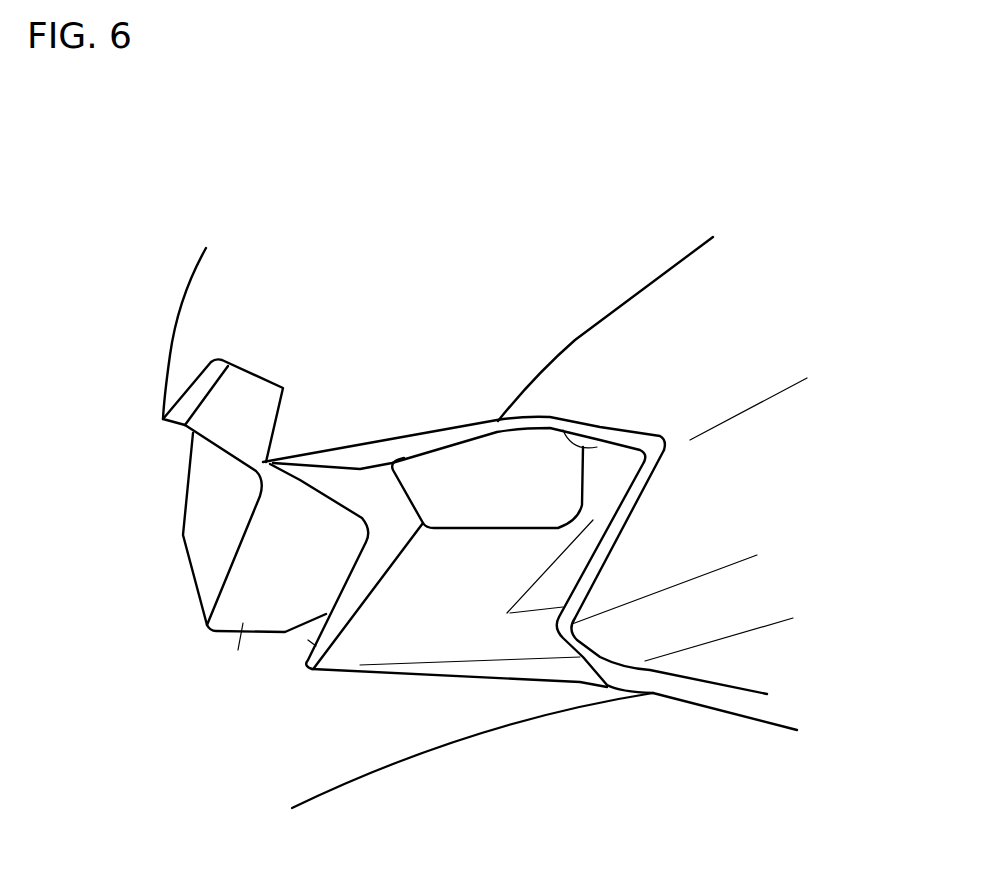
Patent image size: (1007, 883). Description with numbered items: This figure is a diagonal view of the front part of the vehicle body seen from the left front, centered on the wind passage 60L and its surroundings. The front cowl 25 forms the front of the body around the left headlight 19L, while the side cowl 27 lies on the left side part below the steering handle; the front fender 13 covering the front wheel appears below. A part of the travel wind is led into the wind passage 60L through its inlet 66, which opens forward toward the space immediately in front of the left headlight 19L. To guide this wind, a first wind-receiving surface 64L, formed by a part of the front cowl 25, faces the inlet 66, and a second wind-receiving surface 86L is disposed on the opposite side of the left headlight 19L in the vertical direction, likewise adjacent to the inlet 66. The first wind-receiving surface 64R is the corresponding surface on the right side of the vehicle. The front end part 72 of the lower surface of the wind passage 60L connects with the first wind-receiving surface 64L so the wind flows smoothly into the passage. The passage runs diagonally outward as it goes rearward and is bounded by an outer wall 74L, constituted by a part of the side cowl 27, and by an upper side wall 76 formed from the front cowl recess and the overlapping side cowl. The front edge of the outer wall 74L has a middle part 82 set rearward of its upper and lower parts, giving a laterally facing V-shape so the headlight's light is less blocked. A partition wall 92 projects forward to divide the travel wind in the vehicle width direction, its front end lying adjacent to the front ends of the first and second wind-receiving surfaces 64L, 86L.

The front fender 13 is at (328, 807).
The left headlight 19L is at (473, 457).
The front cowl 25 is at (159, 335).
The side cowl 27 is at (681, 657).
The wind passage 60L is at (583, 503).
The first wind-receiving surface 64L is at (383, 633).
The first wind-receiving surface 64R is at (197, 505).
The inlet 66 is at (563, 432).
The front end part 72 is at (523, 607).
The outer wall 74L is at (735, 543).
The upper side wall 76 is at (653, 330).
The middle part 82 is at (662, 437).
The second wind-receiving surface 86L is at (365, 457).
The partition wall 92 is at (243, 625).